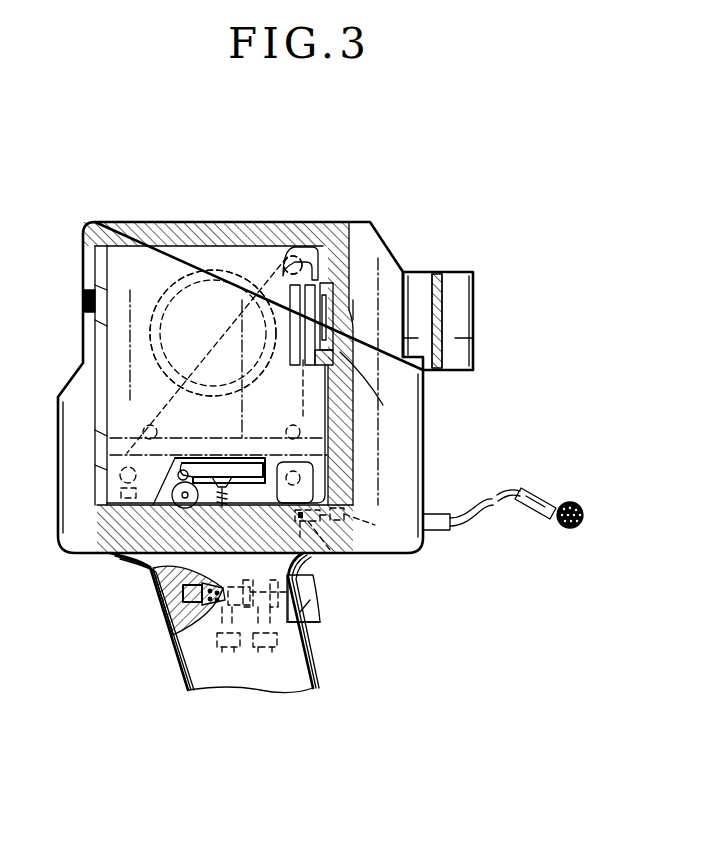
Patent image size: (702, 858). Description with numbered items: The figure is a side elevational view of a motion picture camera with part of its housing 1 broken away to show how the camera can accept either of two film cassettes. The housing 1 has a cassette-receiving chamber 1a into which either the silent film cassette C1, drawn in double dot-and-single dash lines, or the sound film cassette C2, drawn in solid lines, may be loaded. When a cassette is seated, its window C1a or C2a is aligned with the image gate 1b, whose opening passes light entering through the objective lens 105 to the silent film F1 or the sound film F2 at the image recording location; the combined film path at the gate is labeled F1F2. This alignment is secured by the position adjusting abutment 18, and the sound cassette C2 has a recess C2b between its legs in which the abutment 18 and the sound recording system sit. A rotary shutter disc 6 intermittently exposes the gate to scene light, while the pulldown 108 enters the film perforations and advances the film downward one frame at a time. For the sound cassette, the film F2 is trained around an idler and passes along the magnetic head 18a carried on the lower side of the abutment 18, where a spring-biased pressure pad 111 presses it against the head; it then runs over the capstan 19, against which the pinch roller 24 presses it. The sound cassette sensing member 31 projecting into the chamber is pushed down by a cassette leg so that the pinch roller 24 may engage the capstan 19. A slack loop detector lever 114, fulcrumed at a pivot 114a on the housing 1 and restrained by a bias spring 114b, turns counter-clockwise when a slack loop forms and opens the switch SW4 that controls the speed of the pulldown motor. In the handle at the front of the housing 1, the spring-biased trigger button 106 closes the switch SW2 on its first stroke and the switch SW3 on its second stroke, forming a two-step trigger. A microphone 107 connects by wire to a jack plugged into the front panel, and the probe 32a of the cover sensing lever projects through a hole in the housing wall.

The housing 1 is at (168, 234).
The cassette-receiving chamber 1a is at (101, 266).
The image gate 1b is at (352, 312).
The rotary shutter disc 6 is at (340, 312).
The abutment 18 is at (221, 477).
The magnetic head 18a is at (184, 470).
The capstan 19 is at (182, 476).
The pinch roller 24 is at (180, 500).
The sound cassette sensing member 31 is at (125, 500).
The probe 32a is at (84, 298).
The objective lens 105 is at (427, 287).
The trigger button 106 is at (312, 618).
The microphone 107 is at (537, 508).
The pulldown 108 is at (305, 356).
The pressure pad 111 is at (228, 598).
The lever 114 is at (303, 562).
The pivot 114a is at (300, 556).
The bias spring 114b is at (310, 521).
The silent film cassette C1 is at (160, 283).
The sound film cassette C2 is at (207, 355).
The window C1a is at (283, 258).
The window C2a is at (293, 265).
The recess C2b is at (273, 455).
The silent film F1 is at (242, 400).
The sound film F2 is at (247, 480).
The film F1F2 is at (418, 429).
The switch SW2 is at (278, 652).
The switch SW3 is at (222, 652).
The switch SW4 is at (305, 518).